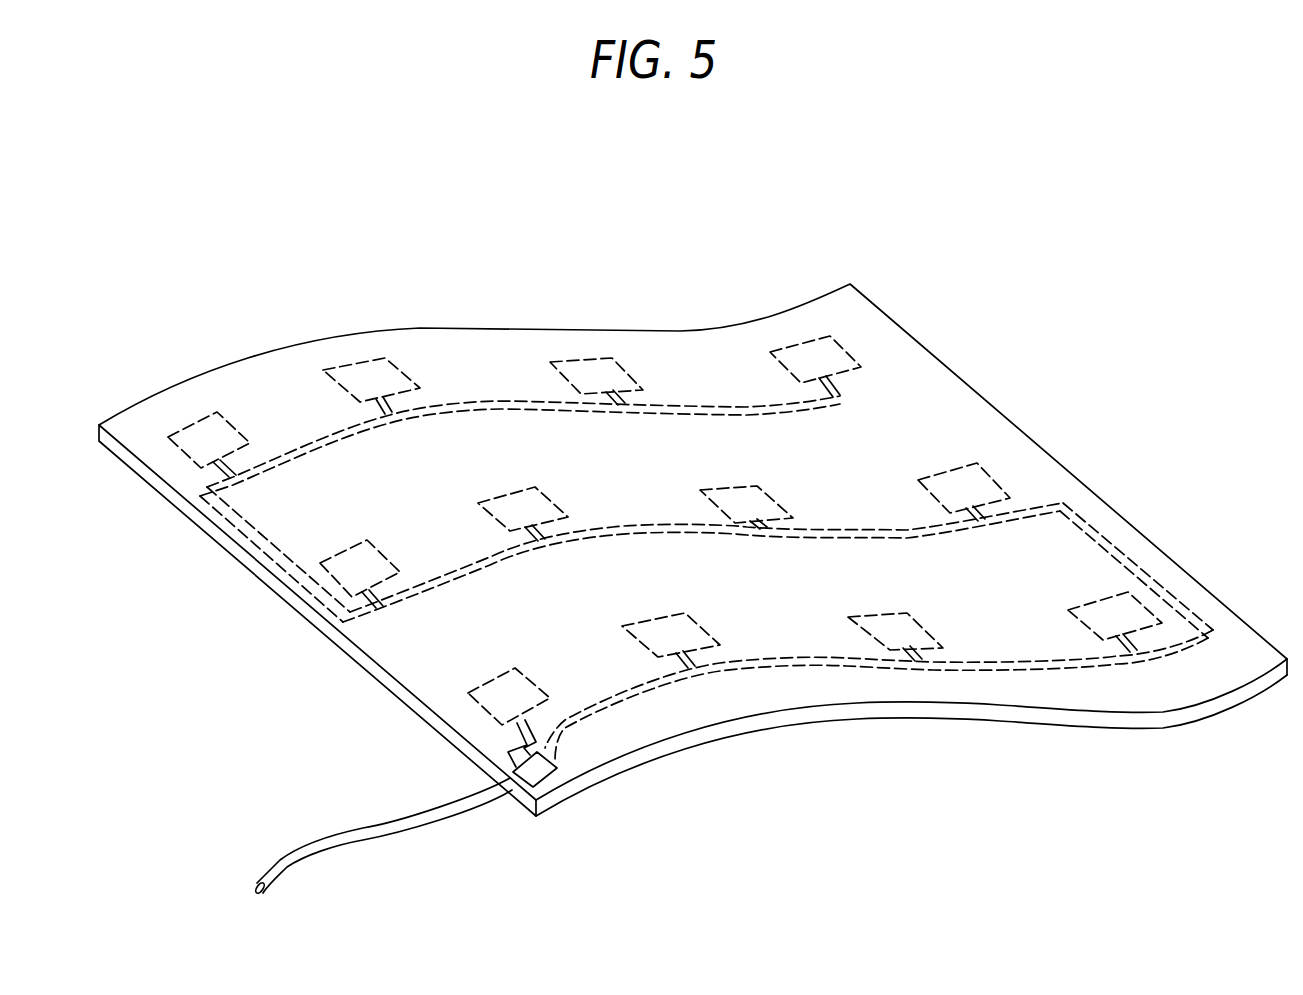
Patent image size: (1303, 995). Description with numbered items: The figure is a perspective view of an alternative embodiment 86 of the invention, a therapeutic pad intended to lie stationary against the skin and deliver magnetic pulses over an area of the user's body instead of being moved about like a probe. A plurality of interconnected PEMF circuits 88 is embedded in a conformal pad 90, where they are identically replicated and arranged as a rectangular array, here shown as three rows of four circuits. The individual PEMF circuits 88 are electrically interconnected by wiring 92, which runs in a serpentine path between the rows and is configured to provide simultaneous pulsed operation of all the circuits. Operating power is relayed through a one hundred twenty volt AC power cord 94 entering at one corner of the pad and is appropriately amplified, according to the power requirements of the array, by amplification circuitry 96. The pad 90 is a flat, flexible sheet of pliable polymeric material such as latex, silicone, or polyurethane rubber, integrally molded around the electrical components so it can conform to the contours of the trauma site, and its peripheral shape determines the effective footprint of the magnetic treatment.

The alternative embodiment 86 is at (747, 308).
The PEMF circuits 88 is at (503, 503).
The conformal pad 90 is at (928, 382).
The wiring 92 is at (705, 535).
The AC power cord 94 is at (410, 825).
The amplification circuitry 96 is at (546, 768).